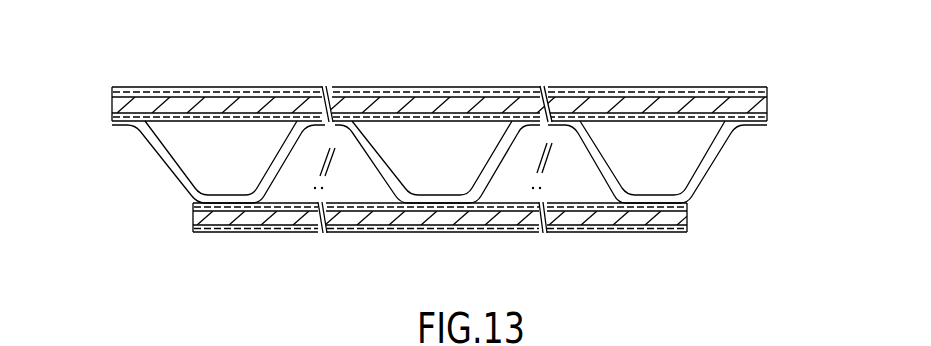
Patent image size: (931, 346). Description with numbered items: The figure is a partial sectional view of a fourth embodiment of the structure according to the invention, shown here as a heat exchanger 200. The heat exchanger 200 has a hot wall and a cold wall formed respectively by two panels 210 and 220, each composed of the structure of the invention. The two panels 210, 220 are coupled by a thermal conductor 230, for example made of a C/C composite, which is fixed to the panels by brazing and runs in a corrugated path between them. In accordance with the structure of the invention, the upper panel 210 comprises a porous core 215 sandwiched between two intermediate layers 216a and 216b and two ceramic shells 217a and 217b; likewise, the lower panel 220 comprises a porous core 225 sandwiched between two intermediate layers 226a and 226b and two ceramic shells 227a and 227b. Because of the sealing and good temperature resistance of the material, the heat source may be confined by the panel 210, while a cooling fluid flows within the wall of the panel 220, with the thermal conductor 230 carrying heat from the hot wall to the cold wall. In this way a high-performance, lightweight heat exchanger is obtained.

The heat exchanger 200 is at (448, 139).
The panel 210 is at (448, 99).
The porous core 215 is at (394, 103).
The intermediate layer 216a is at (112, 94).
The intermediate layer 216b is at (112, 115).
The ceramic shell 217a is at (768, 92).
The ceramic shell 217b is at (767, 118).
The panel 220 is at (432, 233).
The porous core 225 is at (382, 233).
The intermediate layer 226a is at (193, 207).
The intermediate layer 226b is at (193, 228).
The ceramic shell 227a is at (688, 204).
The ceramic shell 227b is at (688, 229).
The thermal conductor 230 is at (600, 144).